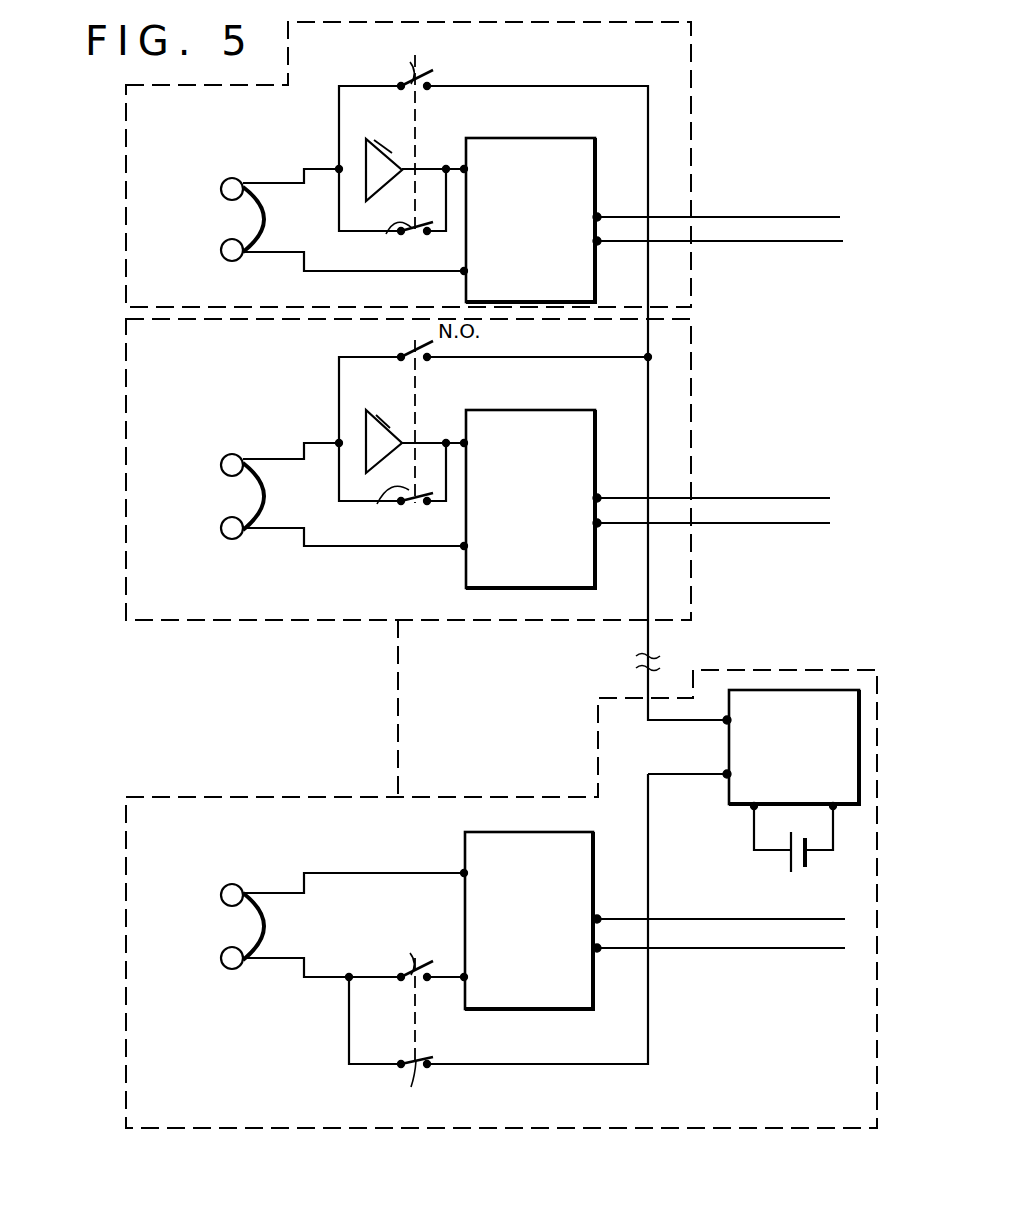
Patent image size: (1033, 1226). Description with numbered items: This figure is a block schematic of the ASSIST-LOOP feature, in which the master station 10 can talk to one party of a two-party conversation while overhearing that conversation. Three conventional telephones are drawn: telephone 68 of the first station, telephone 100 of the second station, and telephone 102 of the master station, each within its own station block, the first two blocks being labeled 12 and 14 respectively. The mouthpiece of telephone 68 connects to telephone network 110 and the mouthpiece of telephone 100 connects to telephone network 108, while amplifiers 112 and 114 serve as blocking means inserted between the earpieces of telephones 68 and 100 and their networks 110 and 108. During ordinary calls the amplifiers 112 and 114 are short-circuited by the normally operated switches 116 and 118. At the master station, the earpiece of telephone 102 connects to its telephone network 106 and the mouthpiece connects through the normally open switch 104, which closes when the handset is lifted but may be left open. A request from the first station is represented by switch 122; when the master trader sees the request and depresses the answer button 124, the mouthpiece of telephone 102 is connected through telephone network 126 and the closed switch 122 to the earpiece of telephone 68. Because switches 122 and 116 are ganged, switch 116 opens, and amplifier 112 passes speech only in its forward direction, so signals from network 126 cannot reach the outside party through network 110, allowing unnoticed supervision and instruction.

The master station 10 is at (126, 890).
The first remote station unit 12 is at (125, 180).
The second remote station unit 14 is at (125, 380).
The conventional telephone 68 is at (237, 222).
The conventional telephone 100 is at (247, 493).
The telephone 102 is at (250, 922).
The normally open switch 104 is at (408, 950).
The telephone network 106 is at (540, 965).
The telephone network 108 is at (539, 557).
The telephone network 110 is at (533, 274).
The amplifier 112 is at (374, 153).
The amplifier 114 is at (376, 429).
The normally operated switch 116 is at (401, 242).
The normally operated switch 118 is at (395, 511).
The switch 122 is at (432, 61).
The answer button 124 is at (420, 1086).
The telephone network 126 is at (808, 793).